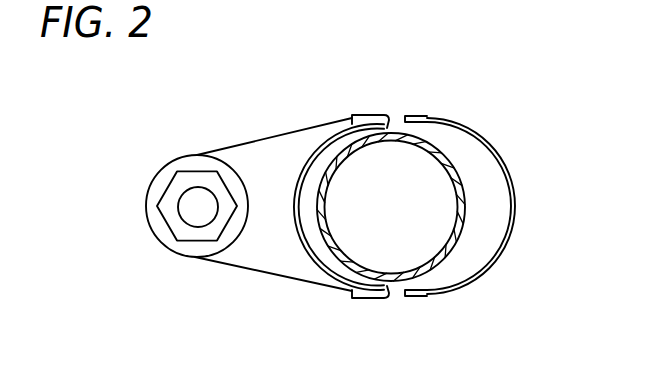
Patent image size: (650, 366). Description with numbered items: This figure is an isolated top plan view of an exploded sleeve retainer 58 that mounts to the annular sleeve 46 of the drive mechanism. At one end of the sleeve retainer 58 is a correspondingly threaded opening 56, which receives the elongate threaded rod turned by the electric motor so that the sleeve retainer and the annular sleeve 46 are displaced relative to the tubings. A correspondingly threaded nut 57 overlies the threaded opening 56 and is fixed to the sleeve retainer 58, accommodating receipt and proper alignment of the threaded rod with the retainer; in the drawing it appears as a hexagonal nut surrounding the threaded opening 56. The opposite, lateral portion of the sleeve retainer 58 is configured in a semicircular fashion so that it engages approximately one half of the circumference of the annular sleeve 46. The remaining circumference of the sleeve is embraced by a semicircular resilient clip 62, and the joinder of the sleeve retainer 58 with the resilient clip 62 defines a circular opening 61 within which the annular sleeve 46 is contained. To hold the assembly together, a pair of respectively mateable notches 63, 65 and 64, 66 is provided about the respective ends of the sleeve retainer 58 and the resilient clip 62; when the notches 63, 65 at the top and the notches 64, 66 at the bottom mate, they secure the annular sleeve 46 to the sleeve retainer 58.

The annular sleeve 46 is at (452, 245).
The threaded opening 56 is at (195, 207).
The threaded nut 57 is at (180, 231).
The sleeve retainer 58 is at (257, 127).
The circular opening 61 is at (485, 190).
The resilient clip 62 is at (500, 133).
The notch 63 is at (379, 297).
The notch 64 is at (413, 294).
The notch 65 is at (384, 114).
The notch 66 is at (406, 116).